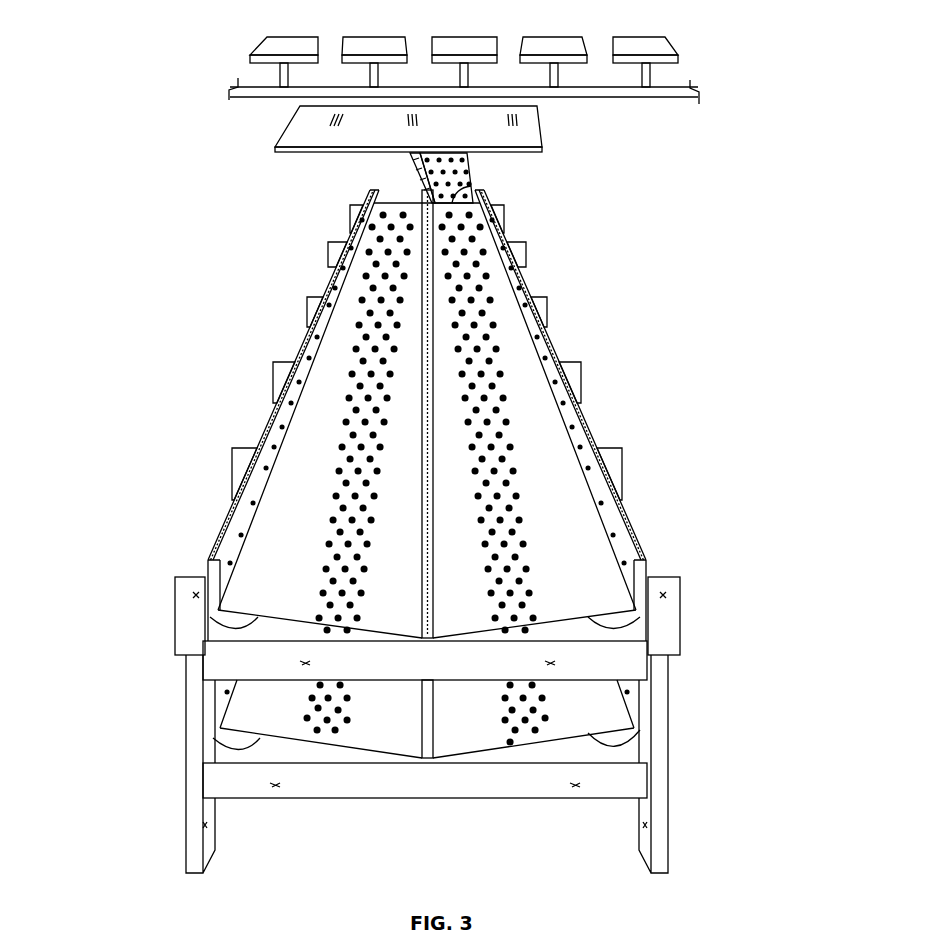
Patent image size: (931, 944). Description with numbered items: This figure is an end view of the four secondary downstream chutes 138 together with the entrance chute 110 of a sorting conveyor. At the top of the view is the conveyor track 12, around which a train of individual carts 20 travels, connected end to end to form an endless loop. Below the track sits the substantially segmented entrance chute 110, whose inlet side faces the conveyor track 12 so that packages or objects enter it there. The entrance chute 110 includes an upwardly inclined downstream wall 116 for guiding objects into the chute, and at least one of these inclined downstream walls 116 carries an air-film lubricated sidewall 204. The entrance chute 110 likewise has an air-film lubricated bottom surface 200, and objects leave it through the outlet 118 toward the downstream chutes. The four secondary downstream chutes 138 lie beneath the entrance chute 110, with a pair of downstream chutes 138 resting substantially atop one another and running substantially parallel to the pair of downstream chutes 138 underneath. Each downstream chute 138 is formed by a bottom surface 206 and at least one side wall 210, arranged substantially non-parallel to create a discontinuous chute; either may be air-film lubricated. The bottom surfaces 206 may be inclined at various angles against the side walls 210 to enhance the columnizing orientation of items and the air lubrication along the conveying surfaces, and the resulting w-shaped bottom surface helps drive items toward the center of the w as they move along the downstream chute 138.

The carts 20 is at (276, 50).
The conveyor track 12 is at (662, 92).
The air-film lubricated sidewall 204 is at (428, 173).
The air-film lubricated bottom surface 200 is at (425, 190).
The upwardly inclined downstream wall 116 is at (470, 155).
The entrance chute 110 is at (510, 180).
The outlet 118 is at (475, 190).
The side wall 210 is at (288, 420).
The bottom surface 206 is at (533, 435).
The secondary downstream chutes 138 is at (225, 620).